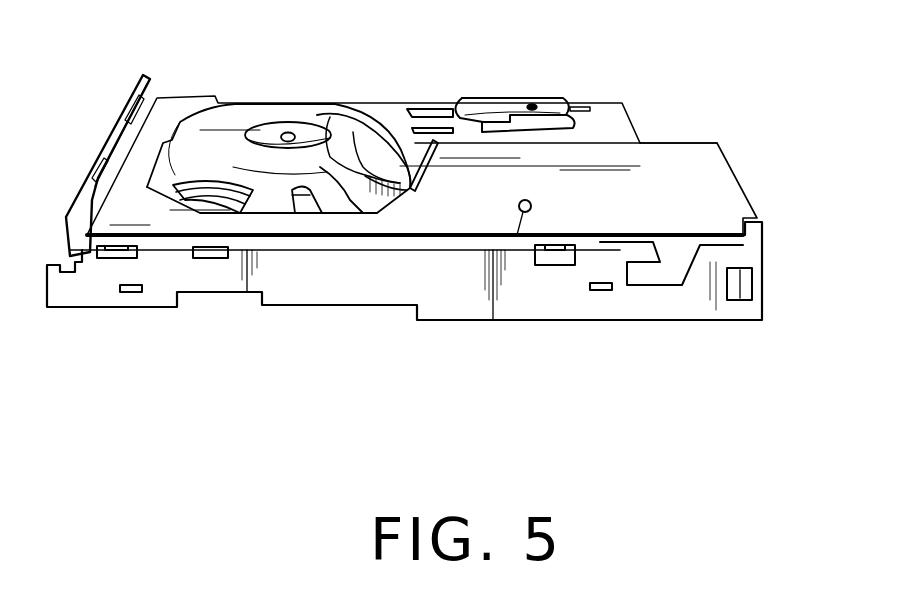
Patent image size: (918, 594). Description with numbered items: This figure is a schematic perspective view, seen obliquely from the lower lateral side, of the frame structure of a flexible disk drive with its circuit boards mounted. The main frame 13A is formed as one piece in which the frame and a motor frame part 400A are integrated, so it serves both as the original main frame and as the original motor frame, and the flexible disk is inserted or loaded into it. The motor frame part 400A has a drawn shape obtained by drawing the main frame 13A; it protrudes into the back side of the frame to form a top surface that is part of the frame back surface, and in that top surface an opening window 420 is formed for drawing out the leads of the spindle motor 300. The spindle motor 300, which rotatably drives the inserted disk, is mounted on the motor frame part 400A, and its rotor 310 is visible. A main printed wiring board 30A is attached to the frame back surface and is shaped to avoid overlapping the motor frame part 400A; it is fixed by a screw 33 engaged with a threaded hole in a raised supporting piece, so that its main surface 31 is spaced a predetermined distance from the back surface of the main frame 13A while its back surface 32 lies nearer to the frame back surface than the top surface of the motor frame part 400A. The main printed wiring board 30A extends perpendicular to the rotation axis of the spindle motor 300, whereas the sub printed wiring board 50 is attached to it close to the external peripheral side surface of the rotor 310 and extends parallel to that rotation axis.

The main printed wiring board 30A is at (723, 183).
The back surface 32 is at (673, 150).
The main frame 13A is at (762, 285).
The main surface 31 is at (477, 238).
The screw 33 is at (517, 227).
The sub printed wiring board 50 is at (447, 100).
The spindle motor 300 is at (312, 100).
The rotor 310 is at (303, 203).
The motor frame part 400A is at (348, 197).
The opening window 420 is at (357, 135).